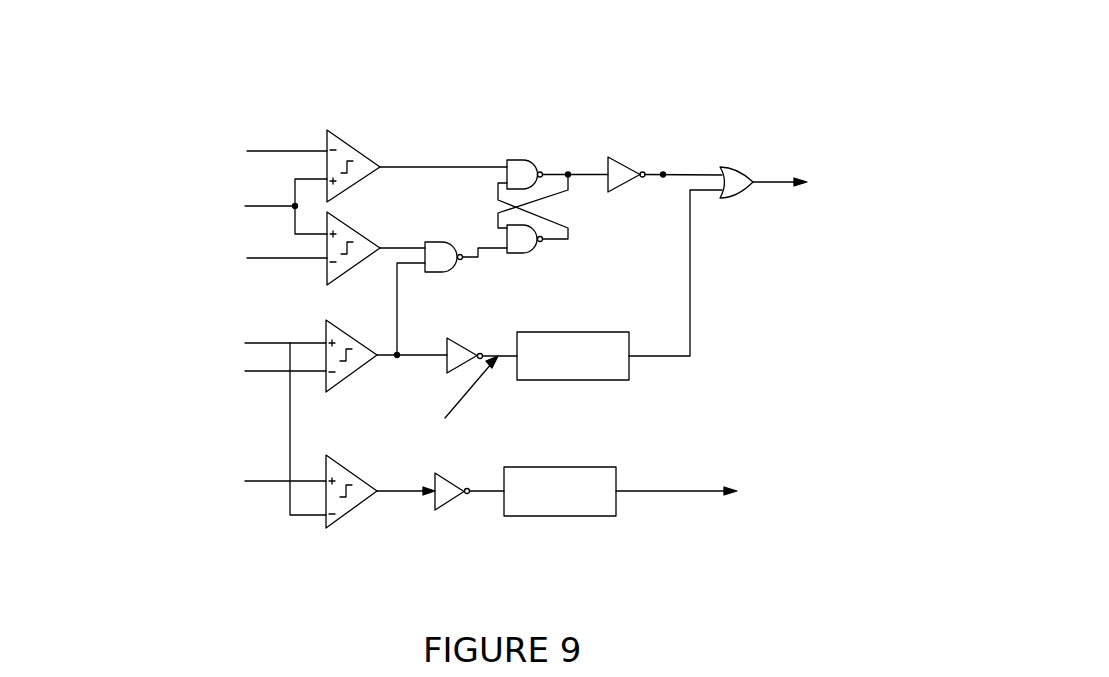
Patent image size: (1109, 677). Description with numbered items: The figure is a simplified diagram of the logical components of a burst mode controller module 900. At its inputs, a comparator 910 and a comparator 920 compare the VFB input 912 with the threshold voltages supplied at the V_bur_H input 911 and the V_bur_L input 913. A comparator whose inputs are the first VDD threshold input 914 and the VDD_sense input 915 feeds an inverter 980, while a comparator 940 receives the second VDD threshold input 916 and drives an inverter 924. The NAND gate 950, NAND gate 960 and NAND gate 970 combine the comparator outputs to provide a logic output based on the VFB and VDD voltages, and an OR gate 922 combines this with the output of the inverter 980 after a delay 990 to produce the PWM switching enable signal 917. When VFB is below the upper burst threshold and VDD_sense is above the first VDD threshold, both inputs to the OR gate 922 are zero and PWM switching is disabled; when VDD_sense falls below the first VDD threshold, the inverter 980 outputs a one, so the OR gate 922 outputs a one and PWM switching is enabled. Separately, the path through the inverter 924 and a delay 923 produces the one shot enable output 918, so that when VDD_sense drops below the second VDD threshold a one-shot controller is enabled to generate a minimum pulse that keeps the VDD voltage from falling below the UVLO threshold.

The burst mode controller module 900 is at (675, 95).
The comparator 910 is at (363, 148).
The V_bur_H input 911 is at (295, 150).
The VFB input 912 is at (283, 202).
The V_bur_L input 913 is at (293, 255).
The Vth_vdd_1 input 914 is at (276, 342).
The VDD_sense input 915 is at (278, 372).
The Vth_vdd_2 threshold input 916 is at (277, 482).
The PWM switching enable signal output 917 is at (777, 177).
The one shot enable output 918 is at (653, 491).
The comparator 920 is at (362, 222).
The OR gate 922 is at (723, 198).
The delay 923 is at (550, 467).
The inverter 924 is at (450, 502).
The comparator 940 is at (358, 477).
The NAND gate 950 is at (538, 165).
The NAND gate 960 is at (547, 249).
The NAND gate 970 is at (432, 272).
The inverter 980 is at (460, 342).
The delay 990 is at (583, 332).